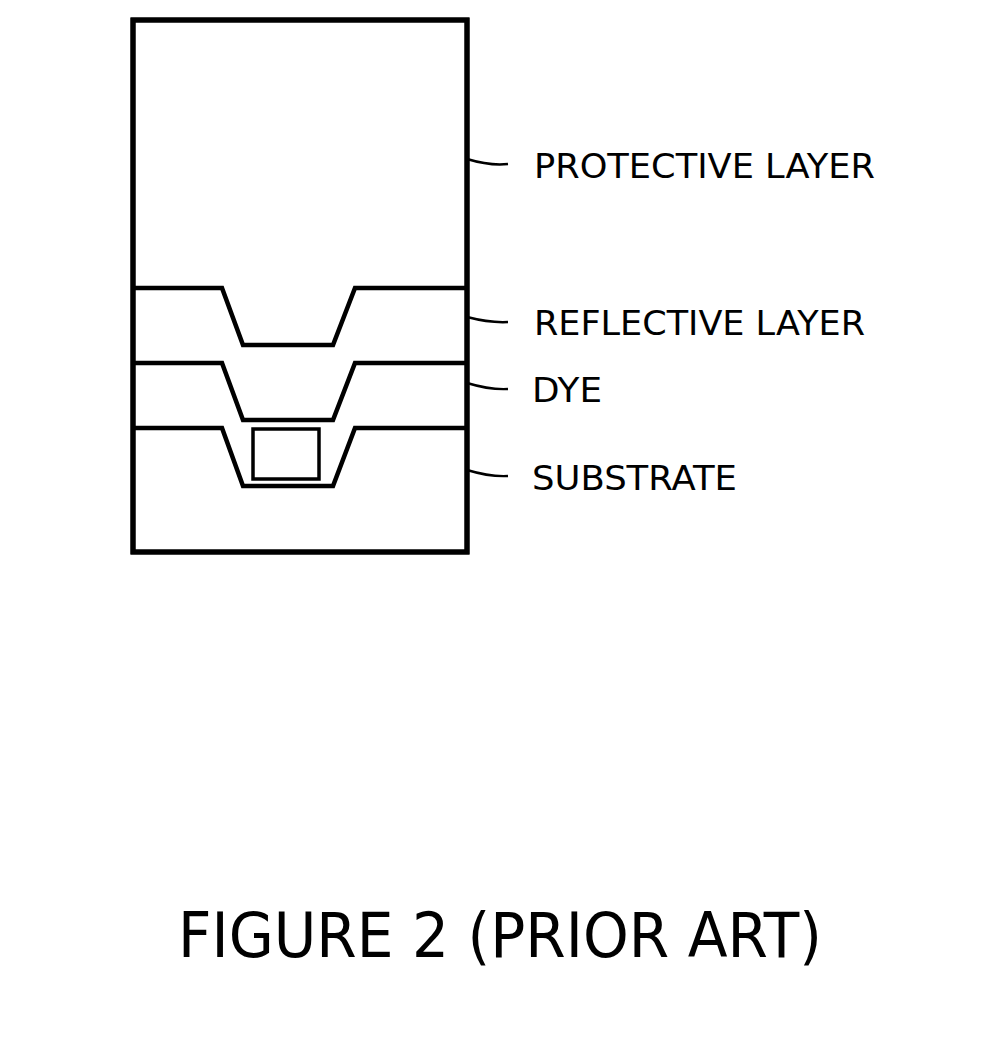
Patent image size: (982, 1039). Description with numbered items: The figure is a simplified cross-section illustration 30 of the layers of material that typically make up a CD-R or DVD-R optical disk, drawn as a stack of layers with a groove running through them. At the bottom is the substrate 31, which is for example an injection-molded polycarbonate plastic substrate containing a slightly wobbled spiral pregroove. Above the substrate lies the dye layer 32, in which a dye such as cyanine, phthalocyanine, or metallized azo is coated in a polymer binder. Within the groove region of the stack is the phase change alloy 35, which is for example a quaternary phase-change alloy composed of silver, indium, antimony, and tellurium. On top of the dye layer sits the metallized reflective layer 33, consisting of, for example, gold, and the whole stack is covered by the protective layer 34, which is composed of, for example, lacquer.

The simplified cross-section illustration 30 is at (467, 552).
The substrate 31 is at (133, 502).
The dye layer 32 is at (133, 392).
The metallized reflective layer 33 is at (133, 326).
The protective layer 34 is at (133, 192).
The phase change alloy 35 is at (268, 469).